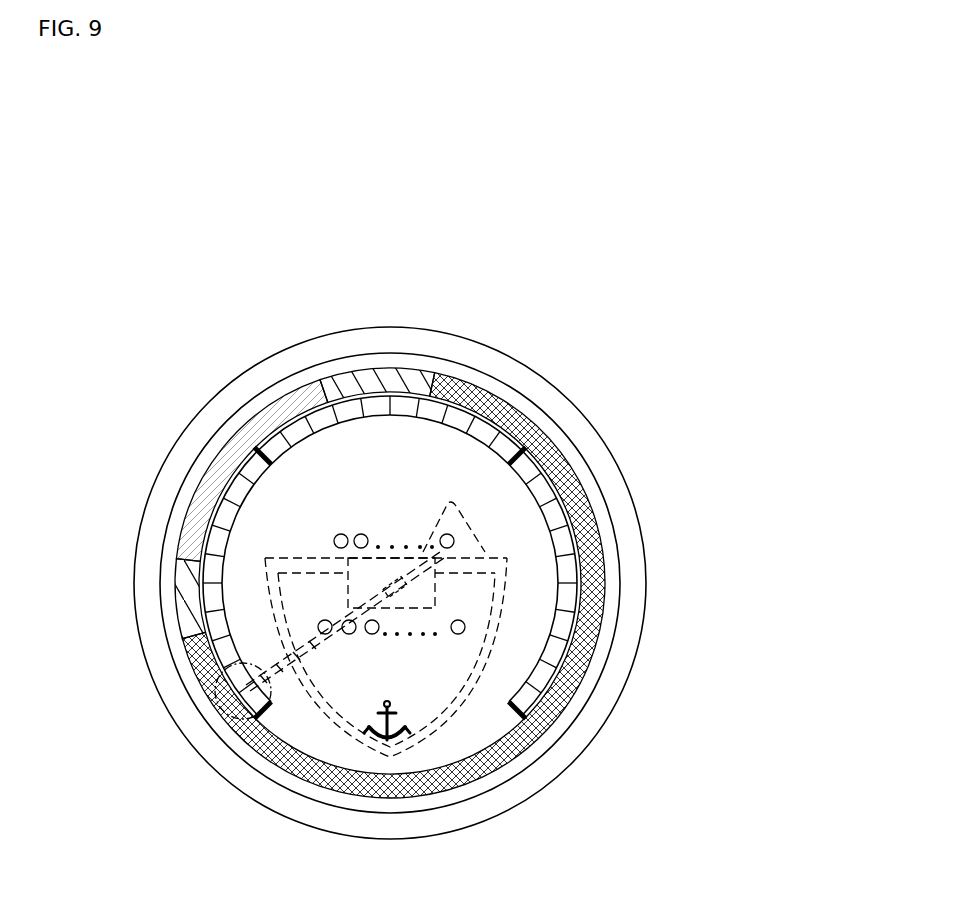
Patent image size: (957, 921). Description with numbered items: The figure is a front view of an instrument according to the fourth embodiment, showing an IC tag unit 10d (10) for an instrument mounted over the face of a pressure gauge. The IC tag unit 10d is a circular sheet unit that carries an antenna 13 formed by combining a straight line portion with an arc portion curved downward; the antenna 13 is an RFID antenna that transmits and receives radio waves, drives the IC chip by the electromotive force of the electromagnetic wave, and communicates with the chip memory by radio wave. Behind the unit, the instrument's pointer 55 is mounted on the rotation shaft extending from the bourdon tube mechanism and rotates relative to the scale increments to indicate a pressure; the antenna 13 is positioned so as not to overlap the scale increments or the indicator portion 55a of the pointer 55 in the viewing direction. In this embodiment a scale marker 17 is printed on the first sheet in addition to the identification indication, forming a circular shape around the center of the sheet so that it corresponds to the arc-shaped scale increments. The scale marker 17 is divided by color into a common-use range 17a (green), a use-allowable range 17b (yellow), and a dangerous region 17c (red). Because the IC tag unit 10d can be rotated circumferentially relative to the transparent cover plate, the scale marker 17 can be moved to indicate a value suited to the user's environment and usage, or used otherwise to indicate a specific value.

The IC tag unit 10 is at (390, 583).
The IC tag unit for an instrument 10d is at (613, 588).
The antenna 13 is at (302, 557).
The scale marker 17 is at (390, 583).
The common-use range 17a is at (208, 452).
The use-allowable range 17b is at (375, 372).
The dangerous region 17c is at (593, 667).
The pointer 55 is at (312, 640).
The indicator portion 55a is at (222, 712).